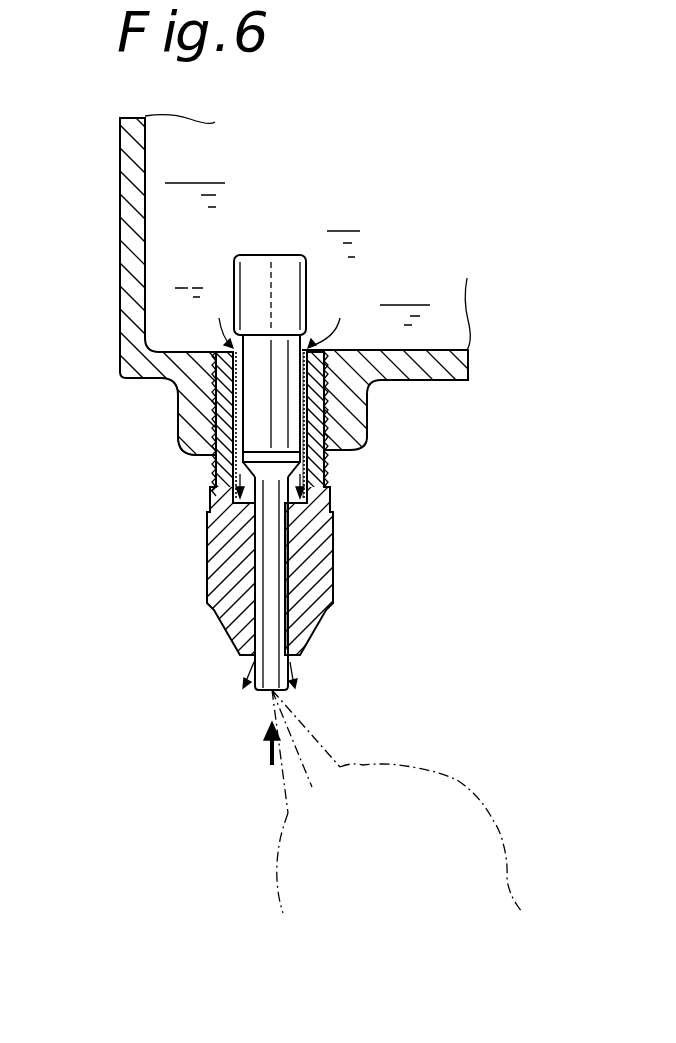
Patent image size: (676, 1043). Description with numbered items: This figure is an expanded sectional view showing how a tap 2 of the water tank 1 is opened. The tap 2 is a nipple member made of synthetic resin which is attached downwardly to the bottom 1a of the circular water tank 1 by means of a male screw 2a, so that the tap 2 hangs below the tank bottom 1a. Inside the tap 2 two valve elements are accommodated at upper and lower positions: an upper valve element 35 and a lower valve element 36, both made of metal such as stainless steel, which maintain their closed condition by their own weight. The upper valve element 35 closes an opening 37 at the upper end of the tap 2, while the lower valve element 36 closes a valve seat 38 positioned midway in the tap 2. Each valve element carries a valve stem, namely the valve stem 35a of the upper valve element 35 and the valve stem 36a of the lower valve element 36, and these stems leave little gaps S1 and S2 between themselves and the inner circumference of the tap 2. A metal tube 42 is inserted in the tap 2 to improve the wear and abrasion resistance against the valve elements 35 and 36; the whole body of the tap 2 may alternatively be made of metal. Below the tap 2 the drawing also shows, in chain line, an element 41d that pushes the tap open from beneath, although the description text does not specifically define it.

The water tank 1 is at (120, 240).
The bottom 1a is at (425, 372).
The tap 2 is at (207, 548).
The male screw 2a is at (212, 413).
The upper valve element 35 is at (307, 282).
The valve stem 35a is at (253, 422).
The lower valve element 36 is at (318, 478).
The valve stem 36a is at (278, 612).
The opening 37 is at (305, 313).
The valve seat 38 is at (300, 500).
The metal tube 42 is at (232, 385).
The gap S1 is at (293, 390).
The gap S2 is at (290, 552).
The workpiece / drop 41d is at (513, 823).